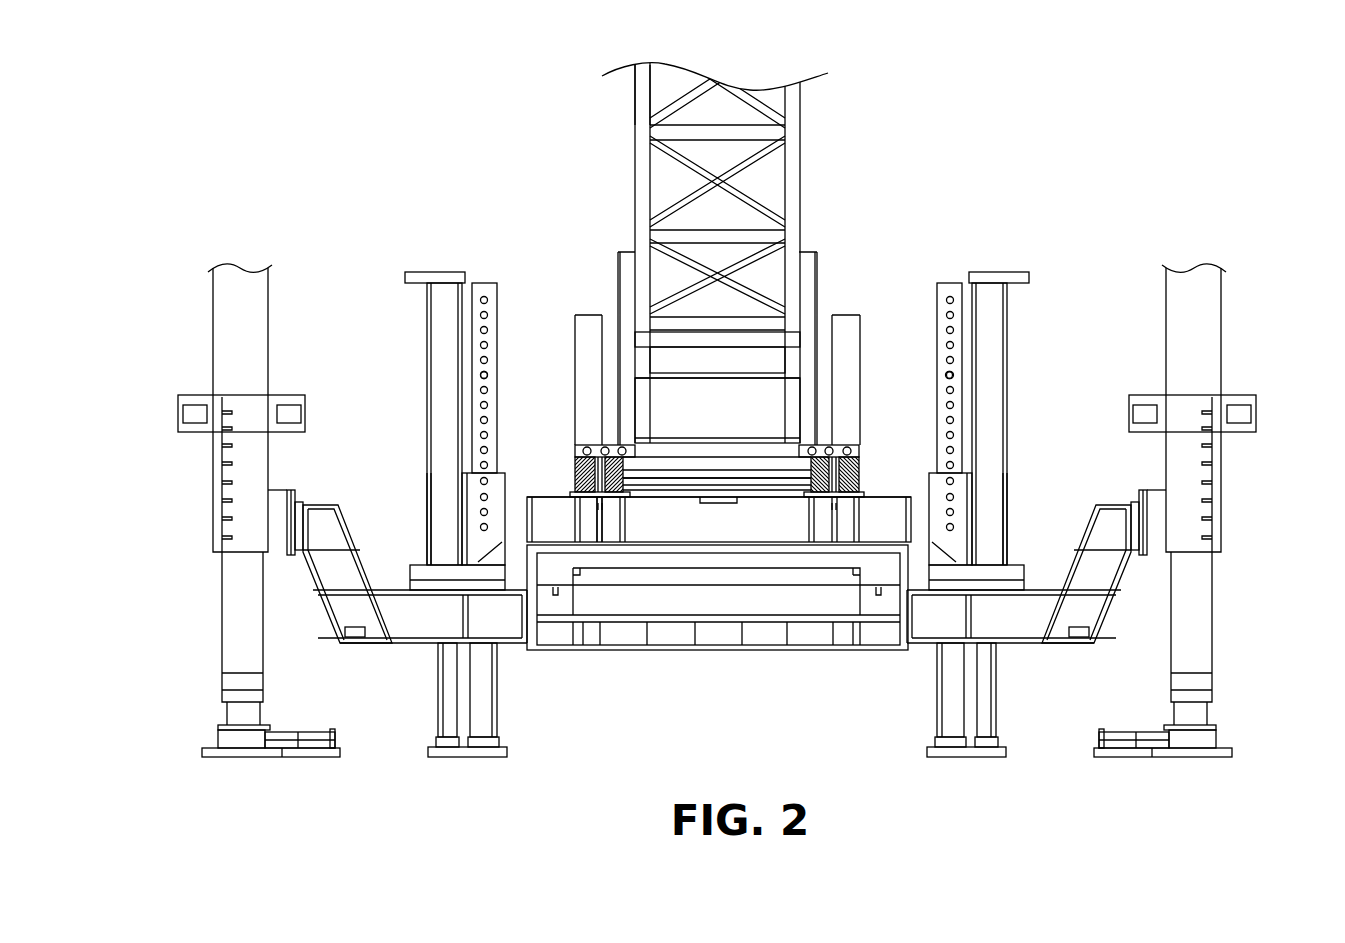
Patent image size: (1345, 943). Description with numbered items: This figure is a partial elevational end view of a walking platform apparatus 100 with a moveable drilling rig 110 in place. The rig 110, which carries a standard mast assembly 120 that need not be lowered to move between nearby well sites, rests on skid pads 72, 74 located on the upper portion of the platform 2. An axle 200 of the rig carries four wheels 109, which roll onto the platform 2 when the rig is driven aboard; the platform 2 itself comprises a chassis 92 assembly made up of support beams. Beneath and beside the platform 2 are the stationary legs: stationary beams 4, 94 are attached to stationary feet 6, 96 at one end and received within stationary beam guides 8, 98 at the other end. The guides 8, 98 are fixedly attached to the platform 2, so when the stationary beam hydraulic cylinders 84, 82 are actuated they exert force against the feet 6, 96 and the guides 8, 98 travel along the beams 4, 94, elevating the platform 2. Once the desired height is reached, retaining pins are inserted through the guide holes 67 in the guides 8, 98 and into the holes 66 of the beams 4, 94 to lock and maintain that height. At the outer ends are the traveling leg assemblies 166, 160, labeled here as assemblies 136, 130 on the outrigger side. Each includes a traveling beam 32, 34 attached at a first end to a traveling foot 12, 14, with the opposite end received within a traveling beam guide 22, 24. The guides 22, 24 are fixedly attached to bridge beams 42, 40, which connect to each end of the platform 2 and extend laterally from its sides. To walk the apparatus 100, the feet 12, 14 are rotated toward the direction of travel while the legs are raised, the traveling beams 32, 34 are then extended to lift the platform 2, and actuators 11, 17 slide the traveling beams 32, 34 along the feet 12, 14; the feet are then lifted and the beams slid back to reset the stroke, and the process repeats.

The platform 2 is at (773, 650).
The stationary beam 4 is at (485, 283).
The stationary foot 6 is at (470, 757).
The stationary beam guide 8 is at (462, 528).
The actuator 11 is at (312, 735).
The traveling foot 12 is at (240, 757).
The traveling foot 14 is at (1196, 757).
The actuator 17 is at (1124, 735).
The traveling beam guide 22 is at (222, 485).
The traveling beam guide 24 is at (1213, 480).
The traveling beam 32 is at (213, 325).
The traveling beam 34 is at (1222, 322).
The bridge beam 40 is at (1060, 645).
The bridge beam 42 is at (372, 645).
The holes 66 is at (488, 376).
The guide holes 67 is at (476, 498).
The skid pad 72 is at (574, 492).
The skid pad 74 is at (860, 492).
The stationary beam hydraulic cylinder 82 is at (1002, 272).
The stationary beam hydraulic cylinder 84 is at (430, 272).
The chassis 92 is at (722, 648).
The stationary beam 94 is at (949, 282).
The stationary foot 96 is at (968, 757).
The stationary beam guide 98 is at (972, 520).
The walking platform apparatus 100 is at (1103, 121).
The wheels 109 is at (612, 503).
The moveable drilling rig 110 is at (812, 122).
The mast assembly 120 is at (635, 120).
The outrigger jack assembly 130 is at (1023, 349).
The outrigger jack assembly 136 is at (398, 341).
The traveling leg assembly 160 is at (1245, 594).
The traveling leg assembly 166 is at (192, 622).
The axle 200 is at (762, 478).